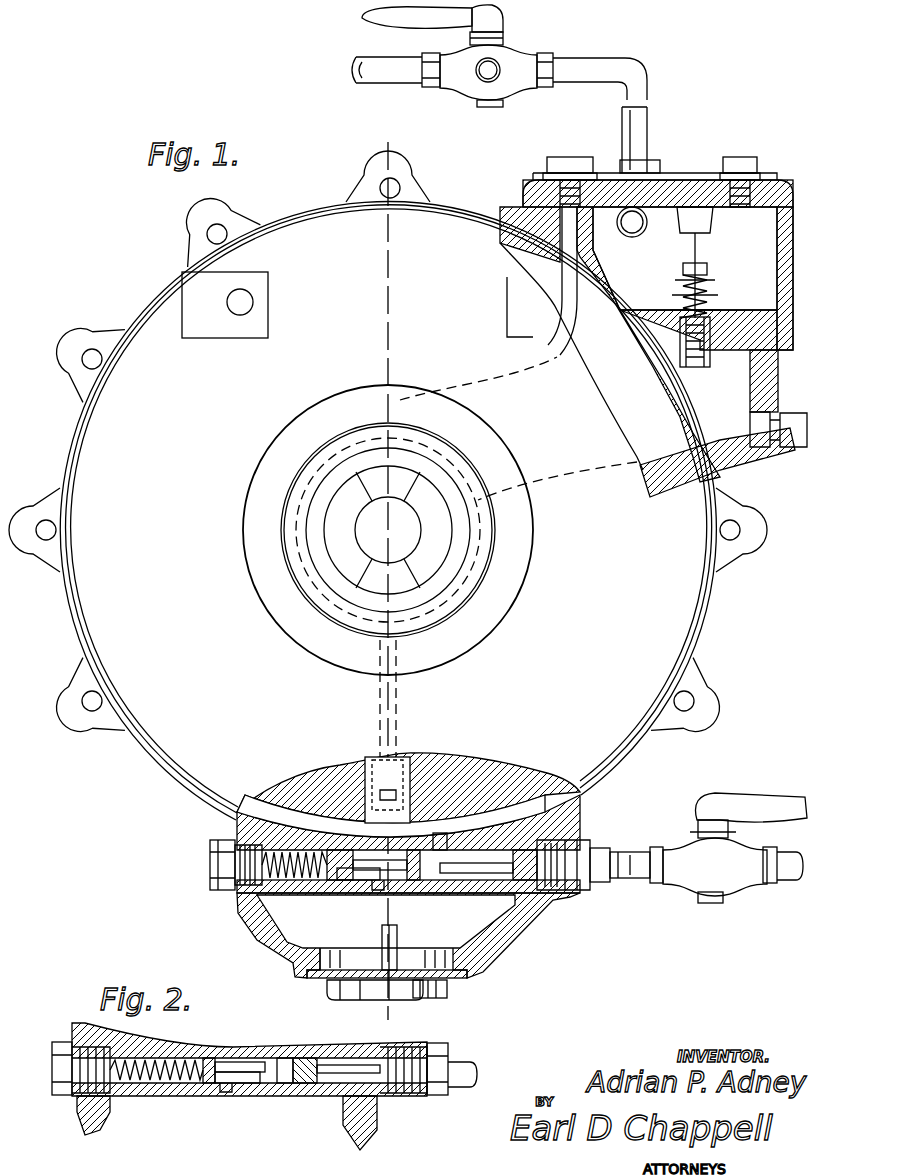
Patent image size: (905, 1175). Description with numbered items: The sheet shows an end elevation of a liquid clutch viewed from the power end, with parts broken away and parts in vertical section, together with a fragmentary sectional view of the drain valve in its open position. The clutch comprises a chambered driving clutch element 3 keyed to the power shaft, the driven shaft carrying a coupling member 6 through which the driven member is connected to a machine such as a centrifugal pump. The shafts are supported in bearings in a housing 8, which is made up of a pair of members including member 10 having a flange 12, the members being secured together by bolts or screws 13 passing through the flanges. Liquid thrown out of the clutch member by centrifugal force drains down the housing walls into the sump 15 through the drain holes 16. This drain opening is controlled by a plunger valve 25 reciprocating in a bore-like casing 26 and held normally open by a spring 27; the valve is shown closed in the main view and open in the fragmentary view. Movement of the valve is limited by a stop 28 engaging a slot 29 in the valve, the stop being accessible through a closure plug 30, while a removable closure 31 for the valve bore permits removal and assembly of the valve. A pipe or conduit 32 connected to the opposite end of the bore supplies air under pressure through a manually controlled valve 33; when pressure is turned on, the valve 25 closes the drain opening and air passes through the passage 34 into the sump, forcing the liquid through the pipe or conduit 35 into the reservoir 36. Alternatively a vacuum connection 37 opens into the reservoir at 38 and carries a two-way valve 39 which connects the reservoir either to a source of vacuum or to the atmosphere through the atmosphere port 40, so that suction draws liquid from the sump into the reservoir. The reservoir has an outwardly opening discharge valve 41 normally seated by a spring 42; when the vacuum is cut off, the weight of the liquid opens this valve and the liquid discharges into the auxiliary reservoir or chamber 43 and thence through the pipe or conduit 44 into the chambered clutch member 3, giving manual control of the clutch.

In FIG. 1, the chambered driving clutch element 3 is at (398, 146).
In FIG. 1, the coupling member 6 is at (335, 525).
In FIG. 1, the housing 8 is at (283, 222).
In FIG. 1, the housing member 10 is at (152, 320).
In FIG. 1, the flange 12 is at (196, 228).
In FIG. 1, the bolts or screws 13 is at (82, 358).
In FIG. 1, the sump 15 is at (506, 924).
In FIG. 2, the sump 15 is at (249, 1086).
In FIG. 1, the drain holes 16 is at (440, 840).
In FIG. 2, the drain holes 16 is at (285, 1054).
In FIG. 1, the plunger valve 25 is at (416, 882).
In FIG. 2, the plunger valve 25 is at (306, 1080).
In FIG. 1, the bore-like casing 26 is at (334, 846).
In FIG. 2, the bore-like casing 26 is at (258, 1086).
In FIG. 1, the spring 27 is at (296, 848).
In FIG. 2, the spring 27 is at (172, 1058).
In FIG. 1, the stop 28 is at (370, 882).
In FIG. 2, the stop 28 is at (222, 1072).
In FIG. 1, the slot 29 is at (350, 874).
In FIG. 2, the slot 29 is at (250, 1076).
In FIG. 1, the closure plug 30 is at (430, 985).
In FIG. 1, the closure 31 is at (226, 865).
In FIG. 2, the closure 31 is at (72, 1040).
In FIG. 1, the pipe or conduit 32 is at (635, 880).
In FIG. 2, the pipe or conduit 32 is at (466, 1080).
In FIG. 1, the manually controlled valve 33 is at (728, 878).
In FIG. 1, the passage 34 is at (474, 876).
In FIG. 2, the passage 34 is at (347, 1060).
In FIG. 1, the pipe or conduit 35 is at (574, 345).
In FIG. 1, the reservoir 36 is at (766, 222).
In FIG. 1, the vacuum connections 37 is at (388, 75).
In FIG. 1, the conduit opening 38 is at (641, 233).
In FIG. 1, the valve 39 is at (520, 60).
In FIG. 1, the atmosphere port 40 is at (484, 82).
In FIG. 1, the discharge valve 41 is at (706, 355).
In FIG. 1, the spring 42 is at (716, 304).
In FIG. 1, the auxiliary reservoir or chamber 43 is at (772, 362).
In FIG. 1, the pipe or conduit 44 is at (653, 472).